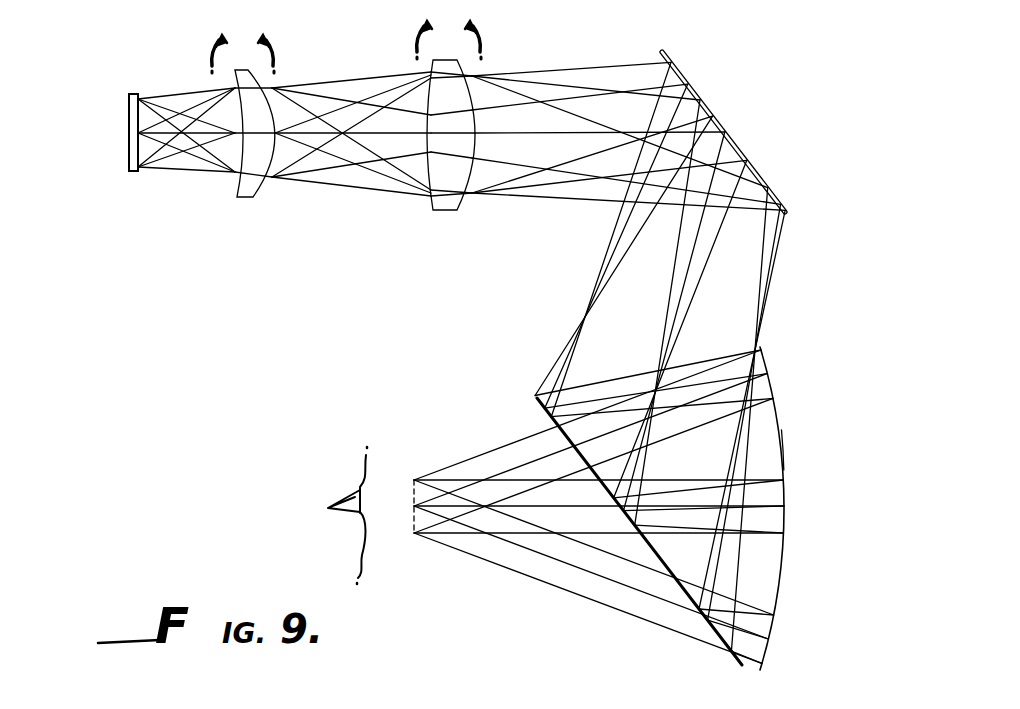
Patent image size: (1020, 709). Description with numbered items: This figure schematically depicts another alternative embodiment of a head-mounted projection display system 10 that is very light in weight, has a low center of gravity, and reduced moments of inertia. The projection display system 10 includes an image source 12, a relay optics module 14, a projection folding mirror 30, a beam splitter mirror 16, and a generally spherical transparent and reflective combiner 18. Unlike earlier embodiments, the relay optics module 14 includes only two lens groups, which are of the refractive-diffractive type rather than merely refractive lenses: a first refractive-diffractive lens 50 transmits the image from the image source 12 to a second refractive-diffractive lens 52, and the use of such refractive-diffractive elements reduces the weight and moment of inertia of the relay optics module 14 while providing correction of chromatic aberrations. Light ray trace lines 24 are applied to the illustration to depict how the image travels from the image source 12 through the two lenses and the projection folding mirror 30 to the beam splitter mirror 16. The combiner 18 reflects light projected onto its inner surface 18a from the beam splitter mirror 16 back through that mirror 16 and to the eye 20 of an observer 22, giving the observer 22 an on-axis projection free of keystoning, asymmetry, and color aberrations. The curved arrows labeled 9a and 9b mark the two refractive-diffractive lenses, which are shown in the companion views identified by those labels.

The projection display system 10 is at (397, 290).
The image source 12 is at (128, 104).
The relay optics module 14 is at (352, 228).
The beam splitter mirror 16 is at (537, 417).
The combiner 18 is at (779, 418).
The inner surface 18a is at (776, 454).
The eye 20 is at (378, 452).
The observer 22 is at (366, 557).
The light ray trace lines 24 is at (561, 68).
The projection folding mirror 30 is at (722, 128).
The first refractive-diffractive lens 50 is at (254, 197).
The second refractive-diffractive lens 52 is at (460, 210).
The section view direction 9a is at (243, 45).
The section view direction 9b is at (449, 31).